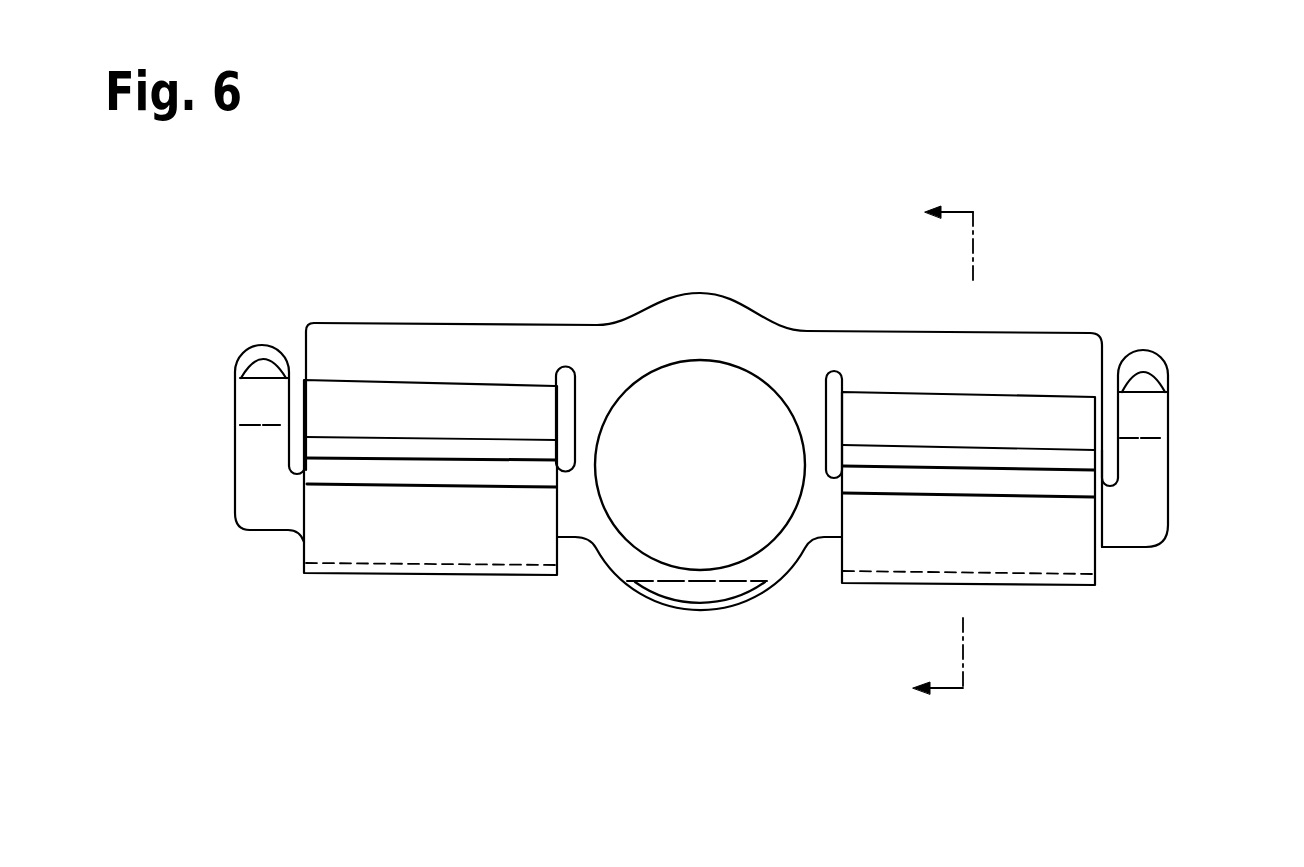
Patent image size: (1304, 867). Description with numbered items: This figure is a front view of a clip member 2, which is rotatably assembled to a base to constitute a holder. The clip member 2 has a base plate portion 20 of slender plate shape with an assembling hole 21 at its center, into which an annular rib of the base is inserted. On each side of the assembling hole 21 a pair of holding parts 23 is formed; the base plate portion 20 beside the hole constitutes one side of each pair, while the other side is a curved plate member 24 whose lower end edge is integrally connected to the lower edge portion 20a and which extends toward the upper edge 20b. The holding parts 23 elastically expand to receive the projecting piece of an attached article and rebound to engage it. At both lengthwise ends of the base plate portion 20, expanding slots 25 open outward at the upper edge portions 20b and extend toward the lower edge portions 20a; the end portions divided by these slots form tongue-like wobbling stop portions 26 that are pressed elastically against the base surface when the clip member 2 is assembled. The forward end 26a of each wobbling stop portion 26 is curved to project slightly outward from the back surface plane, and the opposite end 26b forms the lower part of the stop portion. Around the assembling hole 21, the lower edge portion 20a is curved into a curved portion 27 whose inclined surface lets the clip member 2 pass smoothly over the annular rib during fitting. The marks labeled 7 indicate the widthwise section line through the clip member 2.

The clip member 2 is at (584, 178).
The sectional view line 7 is at (927, 453).
The base plate portion 20 is at (1057, 362).
The lower edge portion 20a is at (412, 575).
The upper edge portion 20b is at (458, 323).
The assembling hole 21 is at (710, 402).
The holding parts 23 is at (383, 477).
The curved plate member 24 is at (476, 497).
The expanding slot 25 is at (290, 452).
The wobbling stop portion 26 is at (243, 462).
The forward end 26a is at (235, 382).
The clip bottom end 26b is at (263, 492).
The curved portion 27 is at (700, 603).